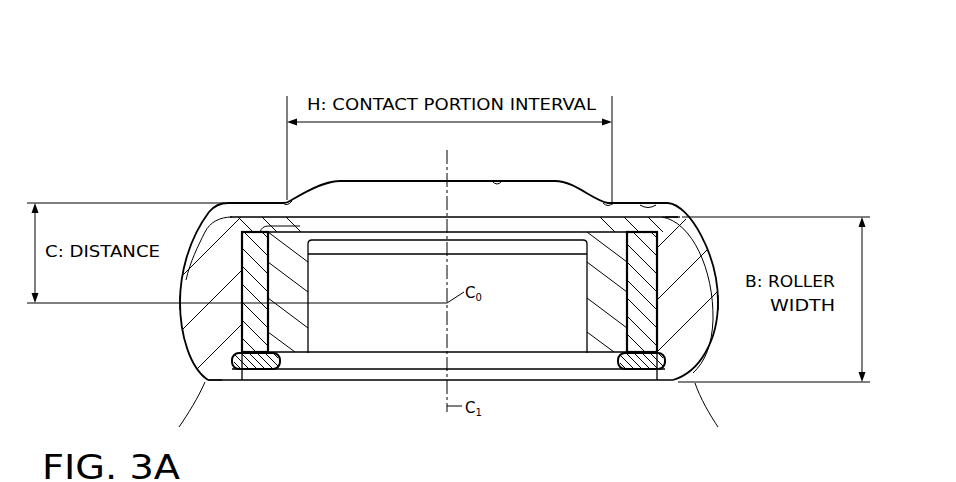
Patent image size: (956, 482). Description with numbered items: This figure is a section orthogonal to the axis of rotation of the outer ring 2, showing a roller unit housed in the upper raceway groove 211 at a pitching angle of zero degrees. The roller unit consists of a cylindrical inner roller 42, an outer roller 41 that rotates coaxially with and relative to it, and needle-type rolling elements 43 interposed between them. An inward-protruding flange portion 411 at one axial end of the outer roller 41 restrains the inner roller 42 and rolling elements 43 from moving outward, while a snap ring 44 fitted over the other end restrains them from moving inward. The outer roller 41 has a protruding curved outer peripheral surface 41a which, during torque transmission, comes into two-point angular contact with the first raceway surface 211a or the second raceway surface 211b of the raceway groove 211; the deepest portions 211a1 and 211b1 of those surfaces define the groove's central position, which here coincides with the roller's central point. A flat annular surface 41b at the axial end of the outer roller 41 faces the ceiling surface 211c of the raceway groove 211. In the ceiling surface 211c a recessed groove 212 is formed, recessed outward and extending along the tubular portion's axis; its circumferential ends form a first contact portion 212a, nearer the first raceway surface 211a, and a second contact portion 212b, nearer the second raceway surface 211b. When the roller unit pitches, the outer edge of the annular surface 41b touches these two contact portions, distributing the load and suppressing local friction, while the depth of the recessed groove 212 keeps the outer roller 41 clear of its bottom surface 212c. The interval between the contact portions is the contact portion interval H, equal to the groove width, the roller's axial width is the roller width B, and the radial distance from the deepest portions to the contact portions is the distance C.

The outer ring 2 is at (695, 383).
The raceway groove 211 is at (203, 381).
The first raceway surface 211a is at (703, 368).
The deepest portion of the first raceway surface 211a1 is at (717, 308).
The second raceway surface 211b is at (206, 221).
The deepest portion of the second raceway surface 211b1 is at (180, 302).
The ceiling surface 211c is at (655, 207).
The recessed groove 212 is at (438, 194).
The first contact portion 212a is at (616, 203).
The second contact portion 212b is at (284, 199).
The bottom surface of the recessed groove 212c is at (498, 184).
The outer roller 41 is at (197, 322).
The flange portion 411 is at (267, 228).
The outer peripheral surface 41a is at (203, 354).
The annular surface 41b is at (674, 218).
The inner roller 42 is at (610, 340).
The rolling elements 43 is at (258, 339).
The snap ring 44 is at (648, 369).